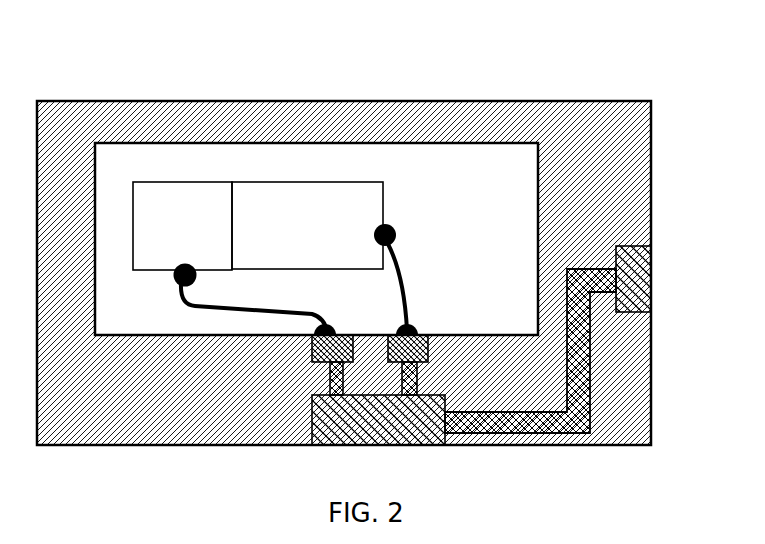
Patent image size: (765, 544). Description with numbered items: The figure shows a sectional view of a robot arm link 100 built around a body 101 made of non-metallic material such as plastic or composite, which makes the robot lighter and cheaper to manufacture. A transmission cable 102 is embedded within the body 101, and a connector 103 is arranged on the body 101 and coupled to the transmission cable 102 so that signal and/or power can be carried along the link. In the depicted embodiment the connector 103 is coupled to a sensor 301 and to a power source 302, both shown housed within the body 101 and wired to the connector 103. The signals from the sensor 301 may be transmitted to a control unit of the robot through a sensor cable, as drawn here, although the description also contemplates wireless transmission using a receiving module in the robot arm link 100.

The robot arm link 100 is at (387, 52).
The body 101 is at (623, 142).
The transmission cable 102 is at (593, 373).
The connector 103 is at (390, 433).
The sensor 301 is at (213, 196).
The power source 302 is at (282, 197).